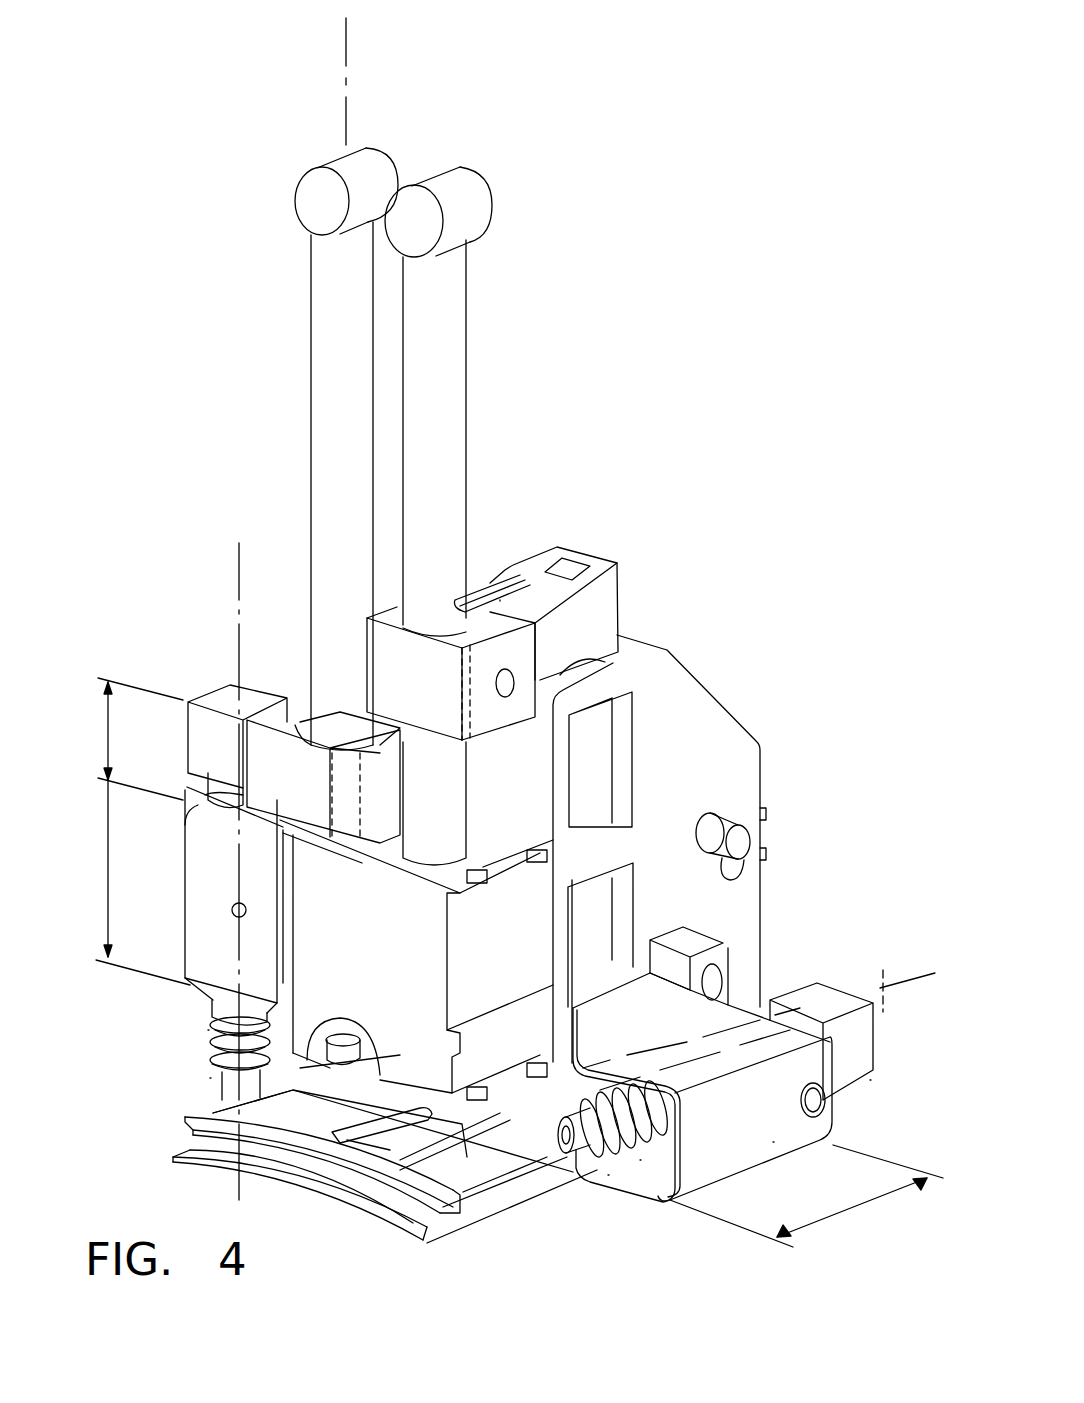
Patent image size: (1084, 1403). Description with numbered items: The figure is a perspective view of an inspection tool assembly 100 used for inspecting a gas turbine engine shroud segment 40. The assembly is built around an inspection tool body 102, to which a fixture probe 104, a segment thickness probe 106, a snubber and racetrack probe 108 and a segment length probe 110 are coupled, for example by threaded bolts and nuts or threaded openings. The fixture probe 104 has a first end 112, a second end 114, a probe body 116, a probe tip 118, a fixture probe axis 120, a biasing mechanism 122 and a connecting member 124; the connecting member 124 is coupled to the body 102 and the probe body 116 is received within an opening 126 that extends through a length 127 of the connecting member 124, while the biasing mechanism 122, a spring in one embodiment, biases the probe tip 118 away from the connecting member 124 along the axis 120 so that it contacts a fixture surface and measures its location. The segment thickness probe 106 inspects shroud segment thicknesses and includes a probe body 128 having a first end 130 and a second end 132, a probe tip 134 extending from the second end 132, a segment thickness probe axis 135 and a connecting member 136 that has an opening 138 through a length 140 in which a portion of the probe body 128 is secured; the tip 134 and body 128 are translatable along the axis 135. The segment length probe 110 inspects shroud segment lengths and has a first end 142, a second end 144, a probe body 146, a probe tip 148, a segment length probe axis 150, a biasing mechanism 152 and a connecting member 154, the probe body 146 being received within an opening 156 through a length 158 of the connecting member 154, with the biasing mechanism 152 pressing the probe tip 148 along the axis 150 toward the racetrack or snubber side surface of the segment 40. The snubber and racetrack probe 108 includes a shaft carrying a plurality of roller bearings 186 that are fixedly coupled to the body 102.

The inspection tool assembly 100 is at (655, 150).
The segment thickness probe axis 135 is at (345, 60).
The first end 130 is at (324, 162).
The probe body 128 is at (311, 330).
The segment thickness probe 106 is at (310, 468).
The fixture probe axis 120 is at (238, 585).
The snubber and racetrack probe 108 is at (474, 560).
The inspection tool body 102 is at (748, 715).
The roller bearings 186 is at (600, 764).
The first end 112 is at (228, 680).
The opening 138 is at (330, 700).
The connecting member 136 is at (260, 735).
The length 140 is at (92, 665).
The length 127 is at (100, 875).
The probe body 116 is at (210, 790).
The opening 126 is at (198, 824).
The connecting member 124 is at (190, 905).
The fixture probe 104 is at (205, 1038).
The biasing mechanism 122 is at (210, 1060).
The second end 114 is at (205, 1078).
The probe tip 118 is at (215, 1100).
The shroud segment 40 is at (178, 1152).
The probe tip 148 is at (485, 1140).
The probe tip 134 is at (383, 1062).
The second end 132 is at (358, 1053).
The segment length probe 110 is at (677, 1178).
The probe body 146 is at (855, 985).
The segment length probe axis 150 is at (888, 975).
The first end 142 is at (875, 1080).
The connecting member 154 is at (773, 1142).
The length 158 is at (825, 1240).
The second end 144 is at (600, 1180).
The biasing mechanism 152 is at (640, 1160).
The opening 156 is at (608, 1175).